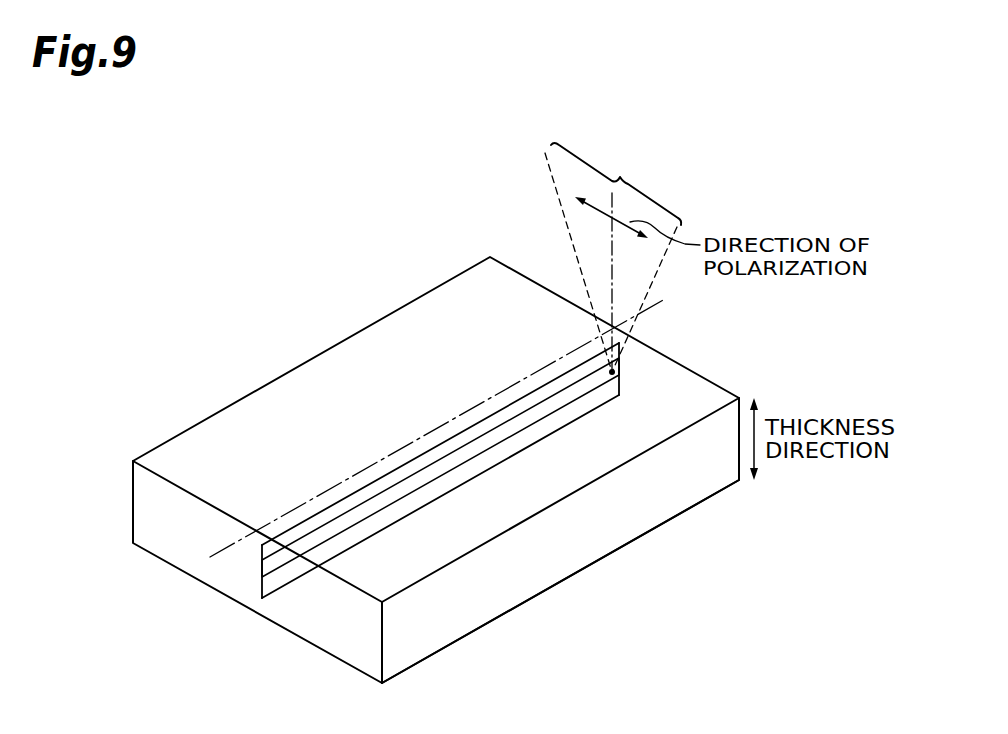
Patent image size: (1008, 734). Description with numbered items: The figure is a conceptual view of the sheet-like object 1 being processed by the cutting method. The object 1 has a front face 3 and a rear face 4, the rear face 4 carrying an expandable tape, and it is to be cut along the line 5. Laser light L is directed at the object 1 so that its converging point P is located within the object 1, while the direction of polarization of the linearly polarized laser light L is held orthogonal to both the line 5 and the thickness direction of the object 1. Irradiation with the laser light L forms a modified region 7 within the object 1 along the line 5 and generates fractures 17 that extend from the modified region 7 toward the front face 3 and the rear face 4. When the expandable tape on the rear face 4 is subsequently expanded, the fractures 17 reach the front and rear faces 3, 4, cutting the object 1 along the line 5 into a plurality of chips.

The object 1 is at (378, 315).
The front face 3 is at (258, 408).
The rear face 4 is at (523, 604).
The line 5 is at (497, 391).
The modified region 7 is at (455, 470).
The fractures 17 is at (368, 484).
The laser light L is at (613, 257).
The converging point P is at (617, 372).